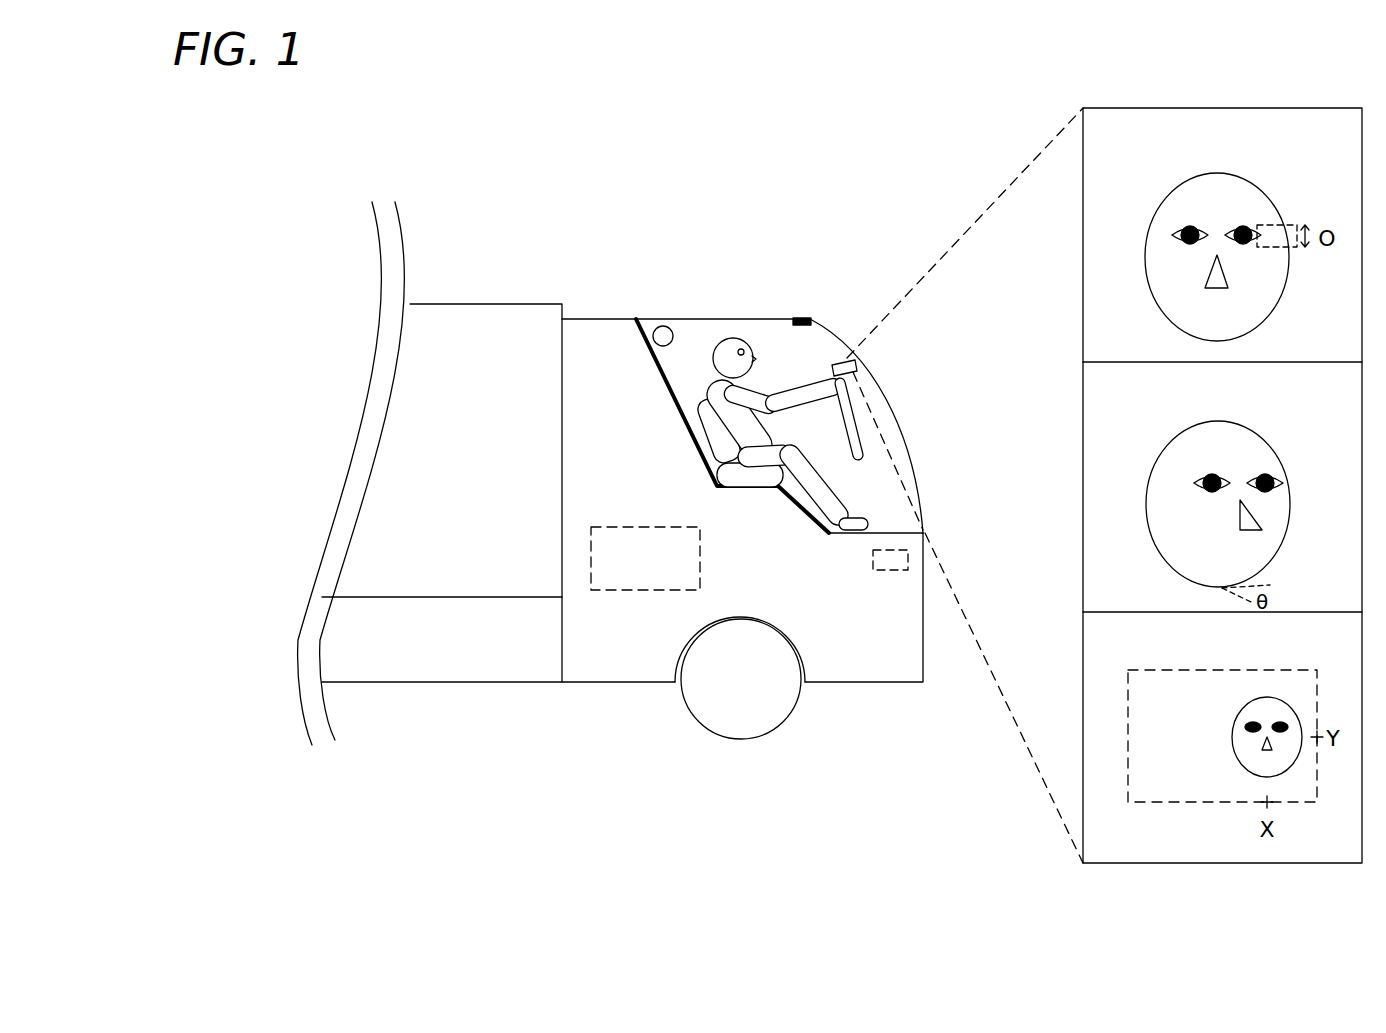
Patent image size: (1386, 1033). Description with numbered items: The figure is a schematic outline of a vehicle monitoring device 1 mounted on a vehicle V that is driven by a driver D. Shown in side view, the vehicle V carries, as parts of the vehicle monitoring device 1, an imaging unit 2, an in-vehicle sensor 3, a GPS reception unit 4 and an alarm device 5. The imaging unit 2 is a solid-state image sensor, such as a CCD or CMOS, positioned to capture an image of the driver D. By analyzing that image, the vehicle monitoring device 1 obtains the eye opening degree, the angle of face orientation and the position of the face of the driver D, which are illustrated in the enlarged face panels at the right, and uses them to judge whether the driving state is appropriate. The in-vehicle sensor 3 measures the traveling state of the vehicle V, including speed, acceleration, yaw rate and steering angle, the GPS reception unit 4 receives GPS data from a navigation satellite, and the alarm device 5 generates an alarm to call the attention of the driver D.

The vehicle monitoring device 1 is at (628, 527).
The imaging unit 2 is at (848, 356).
The in-vehicle sensor 3 is at (882, 572).
The GPS reception unit 4 is at (797, 318).
The alarm device 5 is at (658, 323).
The vehicle V is at (510, 303).
The driver D is at (731, 340).